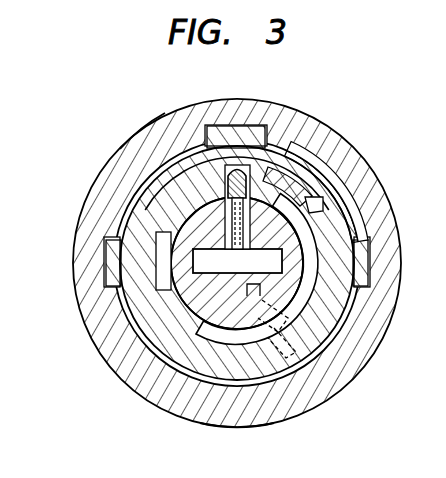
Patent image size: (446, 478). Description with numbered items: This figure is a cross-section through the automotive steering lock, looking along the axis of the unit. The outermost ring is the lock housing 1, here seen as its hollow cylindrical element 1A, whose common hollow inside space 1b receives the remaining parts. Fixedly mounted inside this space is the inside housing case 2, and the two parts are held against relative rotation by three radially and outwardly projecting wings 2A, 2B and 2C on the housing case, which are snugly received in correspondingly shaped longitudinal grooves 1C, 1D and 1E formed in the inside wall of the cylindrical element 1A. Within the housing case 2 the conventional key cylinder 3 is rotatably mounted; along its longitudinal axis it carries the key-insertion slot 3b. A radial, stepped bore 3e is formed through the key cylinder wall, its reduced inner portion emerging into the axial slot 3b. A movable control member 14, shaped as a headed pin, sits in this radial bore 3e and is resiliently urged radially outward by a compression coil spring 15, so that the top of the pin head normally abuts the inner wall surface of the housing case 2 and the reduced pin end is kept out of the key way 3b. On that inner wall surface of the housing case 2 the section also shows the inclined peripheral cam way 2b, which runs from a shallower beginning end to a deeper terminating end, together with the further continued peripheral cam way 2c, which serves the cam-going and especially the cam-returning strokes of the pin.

The lock housing 1 is at (390, 244).
The hollow cylindrical element 1A is at (160, 127).
The hollow inside space 1b is at (234, 392).
The longitudinal groove 1C is at (112, 263).
The longitudinal groove 1D is at (370, 256).
The longitudinal groove 1E is at (266, 130).
The inside housing case 2 is at (165, 192).
The radially outwardly projecting wing 2A is at (110, 287).
The radially outwardly projecting wing 2B is at (366, 268).
The radially outwardly projecting wing 2C is at (222, 130).
The inclined peripheral cam way 2b is at (323, 197).
The peripheral cam way 2c is at (340, 322).
The key cylinder 3 is at (142, 339).
The key-insertion slot 3b is at (155, 240).
The radial stepped bore 3e is at (332, 163).
The movable control member 14 is at (240, 172).
The compression coil spring 15 is at (302, 172).